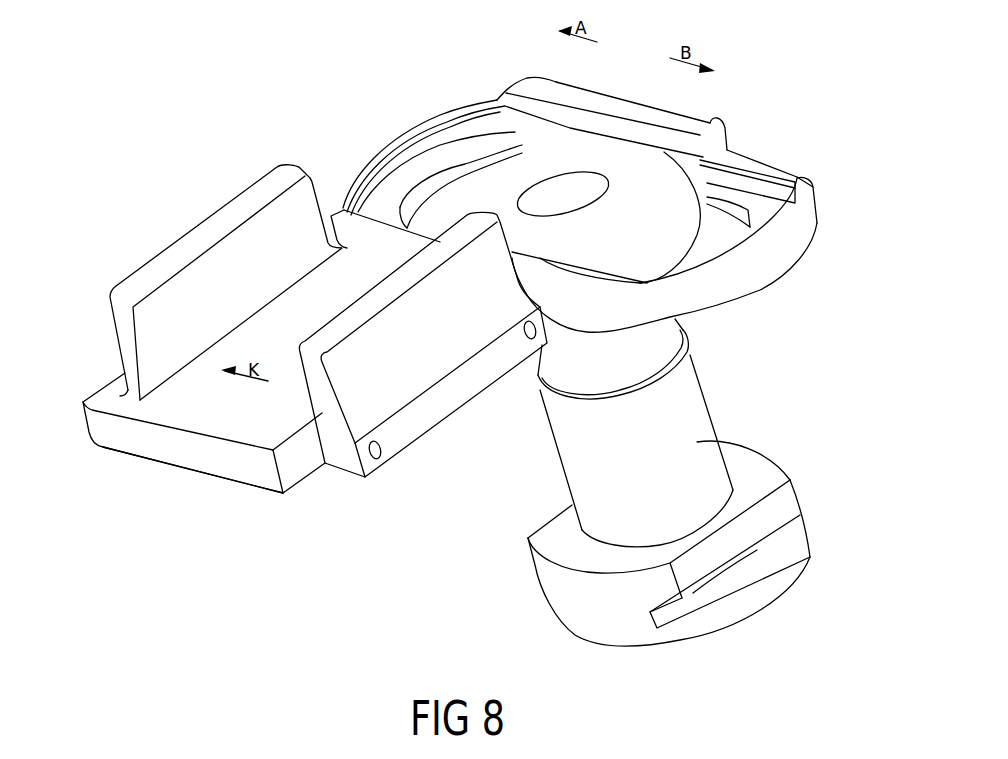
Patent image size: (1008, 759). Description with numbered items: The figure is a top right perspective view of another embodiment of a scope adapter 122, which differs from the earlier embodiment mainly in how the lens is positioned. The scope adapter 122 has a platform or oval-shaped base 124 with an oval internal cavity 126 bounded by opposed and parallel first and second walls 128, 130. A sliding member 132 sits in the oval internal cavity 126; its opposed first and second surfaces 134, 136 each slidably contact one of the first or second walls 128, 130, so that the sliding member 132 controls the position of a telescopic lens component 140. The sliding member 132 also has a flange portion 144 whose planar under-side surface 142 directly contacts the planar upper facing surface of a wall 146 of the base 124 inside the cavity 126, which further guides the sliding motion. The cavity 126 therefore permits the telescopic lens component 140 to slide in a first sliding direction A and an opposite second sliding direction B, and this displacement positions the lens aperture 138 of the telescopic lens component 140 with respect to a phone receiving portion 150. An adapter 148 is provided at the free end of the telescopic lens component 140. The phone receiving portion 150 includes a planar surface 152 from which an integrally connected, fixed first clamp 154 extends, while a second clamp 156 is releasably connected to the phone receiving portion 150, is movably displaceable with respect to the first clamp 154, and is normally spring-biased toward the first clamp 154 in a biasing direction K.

The scope adapter 122 is at (814, 130).
The oval-shaped base 124 is at (788, 247).
The oval internal cavity 126 is at (490, 124).
The first wall 128 is at (747, 154).
The second wall 130 is at (418, 218).
The sliding member 132 is at (697, 133).
The first surface 134 is at (627, 150).
The second surface 136 is at (521, 244).
The lens aperture 138 is at (577, 172).
The telescopic lens component 140 is at (700, 411).
The planar under-side surface 142 is at (700, 227).
The flange portion 144 is at (742, 163).
The wall 146 is at (437, 155).
The adapter 148 is at (762, 462).
The phone receiving portion 150 is at (145, 442).
The planar surface 152 is at (200, 428).
The first clamp 154 is at (127, 337).
The second clamp 156 is at (320, 393).